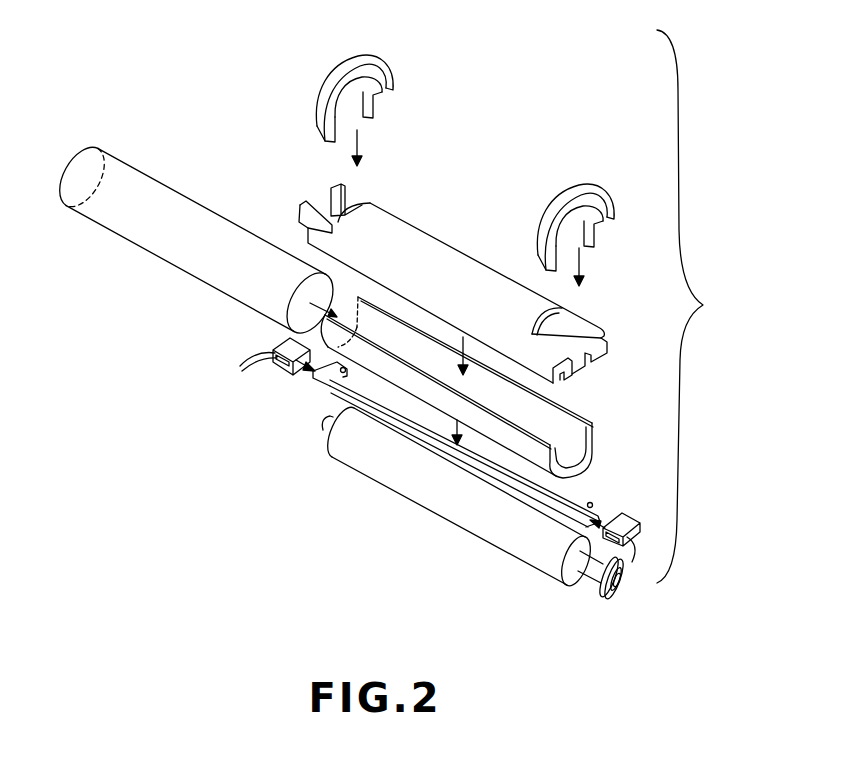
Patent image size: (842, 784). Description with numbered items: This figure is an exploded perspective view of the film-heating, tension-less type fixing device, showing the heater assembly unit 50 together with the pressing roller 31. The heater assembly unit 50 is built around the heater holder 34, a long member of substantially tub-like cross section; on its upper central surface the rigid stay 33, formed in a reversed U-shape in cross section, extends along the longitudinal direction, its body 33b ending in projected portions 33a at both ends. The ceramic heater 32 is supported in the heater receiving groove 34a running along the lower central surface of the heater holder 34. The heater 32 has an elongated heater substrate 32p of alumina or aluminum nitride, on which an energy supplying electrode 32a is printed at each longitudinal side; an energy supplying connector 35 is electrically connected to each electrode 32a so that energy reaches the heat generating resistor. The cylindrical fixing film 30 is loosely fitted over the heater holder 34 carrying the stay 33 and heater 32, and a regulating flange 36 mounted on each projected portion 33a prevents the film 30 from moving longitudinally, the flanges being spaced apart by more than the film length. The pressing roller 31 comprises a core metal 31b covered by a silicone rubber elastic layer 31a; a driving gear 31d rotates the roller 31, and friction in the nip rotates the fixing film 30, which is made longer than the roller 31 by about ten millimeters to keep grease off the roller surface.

The fixing film 30 is at (168, 203).
The pressing roller 31 is at (465, 534).
The elastic layer 31a is at (573, 575).
The core metal 31b is at (323, 430).
The driving gear 31d is at (610, 596).
The ceramic heater 32 is at (465, 444).
The energy supplying electrode 32a is at (322, 377).
The heater substrate 32p is at (500, 472).
The rigid stay 33 is at (453, 265).
The projected portion 33a is at (342, 187).
The case body 33b is at (418, 244).
The heater holder 34 is at (486, 387).
The heater receiving groove 34a is at (568, 470).
The energy supplying connector 35 is at (270, 368).
The regulating flange 36 is at (356, 60).
The heater assembly unit 50 is at (696, 306).